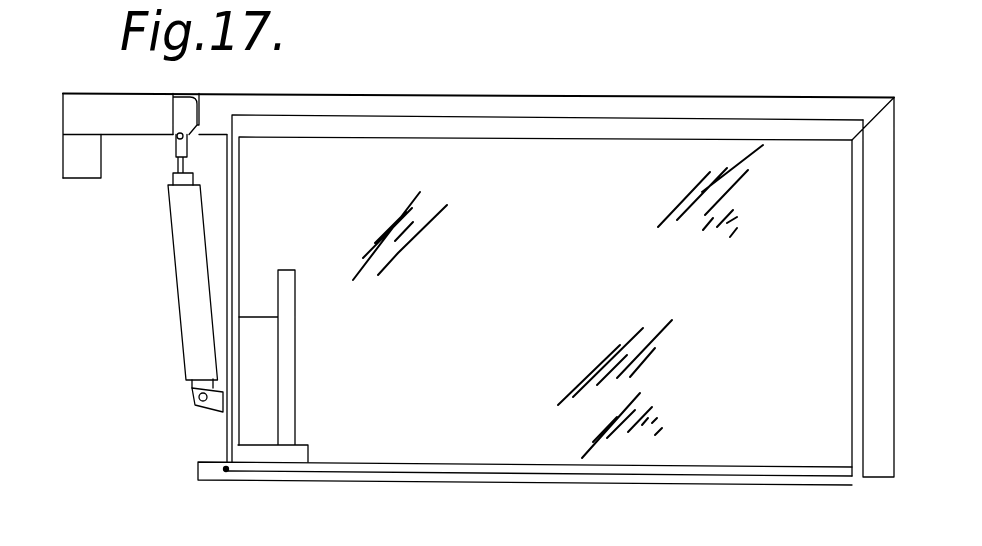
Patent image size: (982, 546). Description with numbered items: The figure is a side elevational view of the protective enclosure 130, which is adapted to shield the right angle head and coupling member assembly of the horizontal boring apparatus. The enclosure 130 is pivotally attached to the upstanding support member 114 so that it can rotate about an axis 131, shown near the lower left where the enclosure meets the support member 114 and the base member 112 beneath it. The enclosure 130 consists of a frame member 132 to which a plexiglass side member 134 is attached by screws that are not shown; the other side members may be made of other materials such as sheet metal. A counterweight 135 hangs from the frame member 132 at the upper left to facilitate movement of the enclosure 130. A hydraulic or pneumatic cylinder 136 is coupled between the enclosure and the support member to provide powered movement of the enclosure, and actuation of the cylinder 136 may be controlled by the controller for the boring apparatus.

The protective enclosure 130 is at (372, 93).
The frame member 132 is at (575, 103).
The plexiglass side member 134 is at (550, 305).
The counterweight 135 is at (77, 168).
The hydraulic or pneumatic cylinder 136 is at (183, 268).
The axis 131 is at (226, 469).
The bottom rail 112 is at (472, 476).
The upstanding support member 114 is at (287, 398).